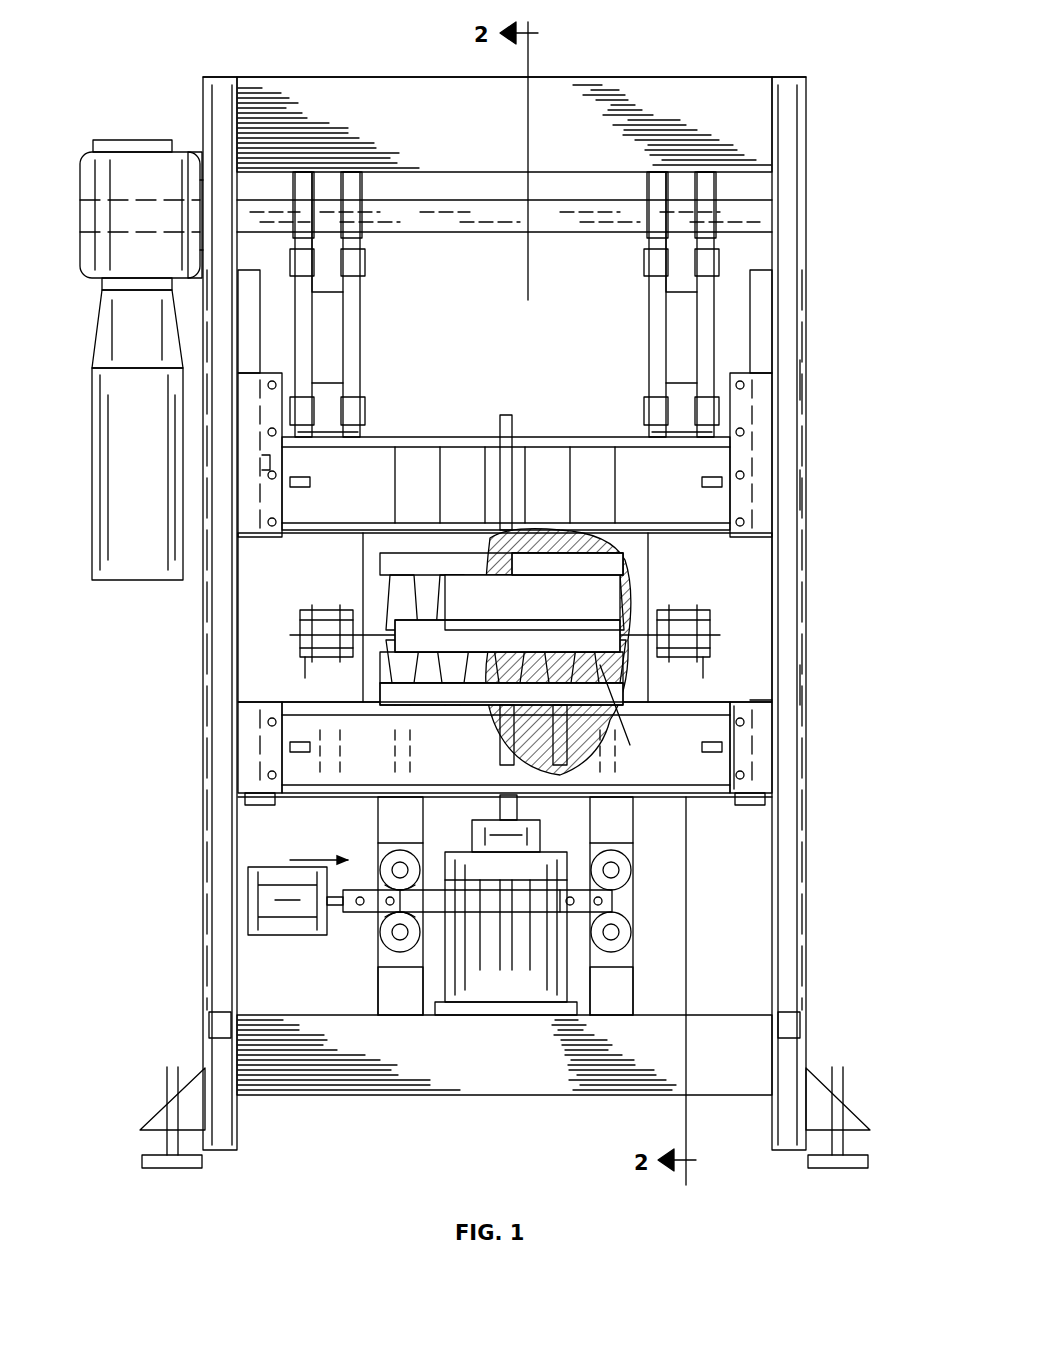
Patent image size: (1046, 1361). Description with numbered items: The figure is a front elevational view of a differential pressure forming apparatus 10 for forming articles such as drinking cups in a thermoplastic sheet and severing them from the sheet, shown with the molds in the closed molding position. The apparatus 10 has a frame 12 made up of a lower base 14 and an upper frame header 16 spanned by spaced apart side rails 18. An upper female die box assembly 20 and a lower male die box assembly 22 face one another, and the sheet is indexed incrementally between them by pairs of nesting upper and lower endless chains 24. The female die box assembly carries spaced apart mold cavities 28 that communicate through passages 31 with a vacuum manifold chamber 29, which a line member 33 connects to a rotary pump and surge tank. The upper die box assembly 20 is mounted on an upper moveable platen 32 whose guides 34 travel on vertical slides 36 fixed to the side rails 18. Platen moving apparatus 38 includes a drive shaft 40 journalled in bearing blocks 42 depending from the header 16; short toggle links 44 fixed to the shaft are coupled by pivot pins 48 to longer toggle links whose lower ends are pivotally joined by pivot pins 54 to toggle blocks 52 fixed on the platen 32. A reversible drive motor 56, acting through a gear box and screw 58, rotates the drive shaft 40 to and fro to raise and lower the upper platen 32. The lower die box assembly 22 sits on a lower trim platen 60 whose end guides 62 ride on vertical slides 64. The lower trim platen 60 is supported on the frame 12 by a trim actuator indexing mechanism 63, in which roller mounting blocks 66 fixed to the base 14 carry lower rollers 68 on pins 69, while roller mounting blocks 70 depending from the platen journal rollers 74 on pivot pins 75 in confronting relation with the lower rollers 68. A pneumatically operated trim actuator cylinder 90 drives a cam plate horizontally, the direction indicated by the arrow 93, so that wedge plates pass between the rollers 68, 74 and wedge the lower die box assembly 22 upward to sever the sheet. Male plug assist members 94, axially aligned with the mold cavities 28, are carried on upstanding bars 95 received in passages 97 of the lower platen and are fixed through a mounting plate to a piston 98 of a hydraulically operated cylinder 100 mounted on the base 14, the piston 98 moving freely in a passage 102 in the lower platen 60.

The apparatus 10 is at (822, 385).
The frame 12 is at (822, 970).
The lower base 14 is at (385, 1093).
The upper frame header 16 is at (300, 77).
The side rails 18 is at (222, 735).
The upper female die box assembly 20 is at (822, 490).
The lower male die box assembly 22 is at (822, 685).
The endless chains 24 is at (300, 627).
The mold cavities 28 is at (640, 622).
The vacuum manifold chamber 29 is at (590, 540).
The passages 31 is at (640, 582).
The upper moveable platen 32 is at (320, 548).
The line member 33 is at (512, 435).
The guides 34 is at (250, 380).
The vertical slides 36 is at (265, 305).
The platen moving apparatus 38 is at (132, 100).
The drive shaft 40 is at (595, 200).
The bearing blocks 42 is at (362, 182).
The short toggle links 44 is at (330, 248).
The pivot pins 48 is at (650, 275).
The toggle blocks 52 is at (685, 435).
The pivot pins 54 is at (365, 408).
The reversible drive motor 56 is at (115, 600).
The gear box and screw 58 is at (85, 160).
The lower trim platen 60 is at (700, 800).
The end guides 62 is at (740, 702).
The trim actuator indexing mechanism 63 is at (175, 935).
The vertical slides 64 is at (755, 700).
The roller mounting blocks 66 is at (390, 985).
The lower rollers 68 is at (375, 918).
The pins 69 is at (630, 920).
The roller mounting blocks 70 is at (400, 822).
The rollers 74 is at (390, 865).
The pivot pins 75 is at (430, 868).
The trim actuator cylinder 90 is at (265, 935).
The slide direction 93 is at (310, 860).
The male plug assist members 94 is at (630, 740).
The upstanding bars 95 is at (583, 720).
The passages 97 is at (500, 735).
The piston 98 is at (540, 810).
The hydraulically operated cylinder 100 is at (515, 965).
The passage 102 is at (500, 808).